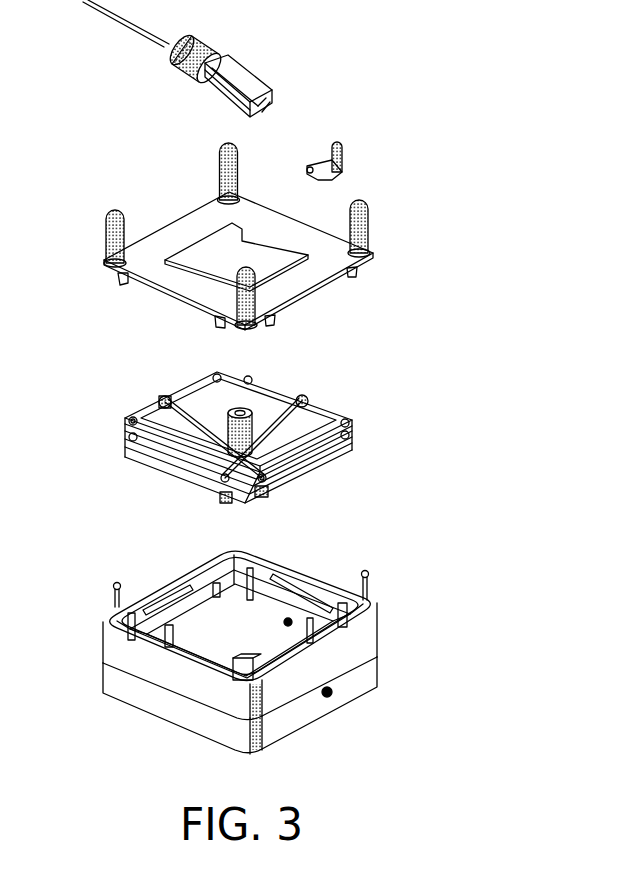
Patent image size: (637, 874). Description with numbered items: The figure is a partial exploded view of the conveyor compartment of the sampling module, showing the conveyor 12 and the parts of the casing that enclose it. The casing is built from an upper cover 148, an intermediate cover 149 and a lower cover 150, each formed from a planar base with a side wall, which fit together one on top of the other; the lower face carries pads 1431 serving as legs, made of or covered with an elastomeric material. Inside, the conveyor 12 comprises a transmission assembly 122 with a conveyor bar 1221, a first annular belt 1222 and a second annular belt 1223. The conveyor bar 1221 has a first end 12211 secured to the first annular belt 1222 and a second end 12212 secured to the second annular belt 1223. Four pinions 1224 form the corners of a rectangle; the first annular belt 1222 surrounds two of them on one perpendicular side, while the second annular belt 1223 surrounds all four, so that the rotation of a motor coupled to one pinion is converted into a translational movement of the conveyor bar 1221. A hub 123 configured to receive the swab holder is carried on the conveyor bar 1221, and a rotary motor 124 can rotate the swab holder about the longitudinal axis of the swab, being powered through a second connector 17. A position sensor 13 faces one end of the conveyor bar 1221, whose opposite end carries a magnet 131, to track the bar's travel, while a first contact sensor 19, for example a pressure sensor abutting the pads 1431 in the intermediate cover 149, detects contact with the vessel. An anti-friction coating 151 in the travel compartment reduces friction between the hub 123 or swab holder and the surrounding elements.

The conveyor 12 is at (268, 431).
The sensor of the position of the conveyor 13 is at (247, 644).
The second connector 17 is at (262, 108).
The first contact sensor 19 is at (117, 585).
The transmission assembly 122 is at (268, 431).
The hub 123 is at (230, 433).
The motor 124 is at (243, 78).
The magnet 131 is at (157, 402).
The upper cover 148 is at (357, 680).
The intermediate cover 149 is at (357, 645).
The lower cover 150 is at (280, 236).
The anti-friction coating 151 is at (217, 638).
The conveyor bar 1221 is at (313, 403).
The first annular belt 1222 is at (310, 475).
The second annular belt 1223 is at (240, 372).
The pinions 1224 is at (133, 418).
The pads 1431 is at (365, 222).
The first end 12211 is at (285, 488).
The second end 12212 is at (165, 395).